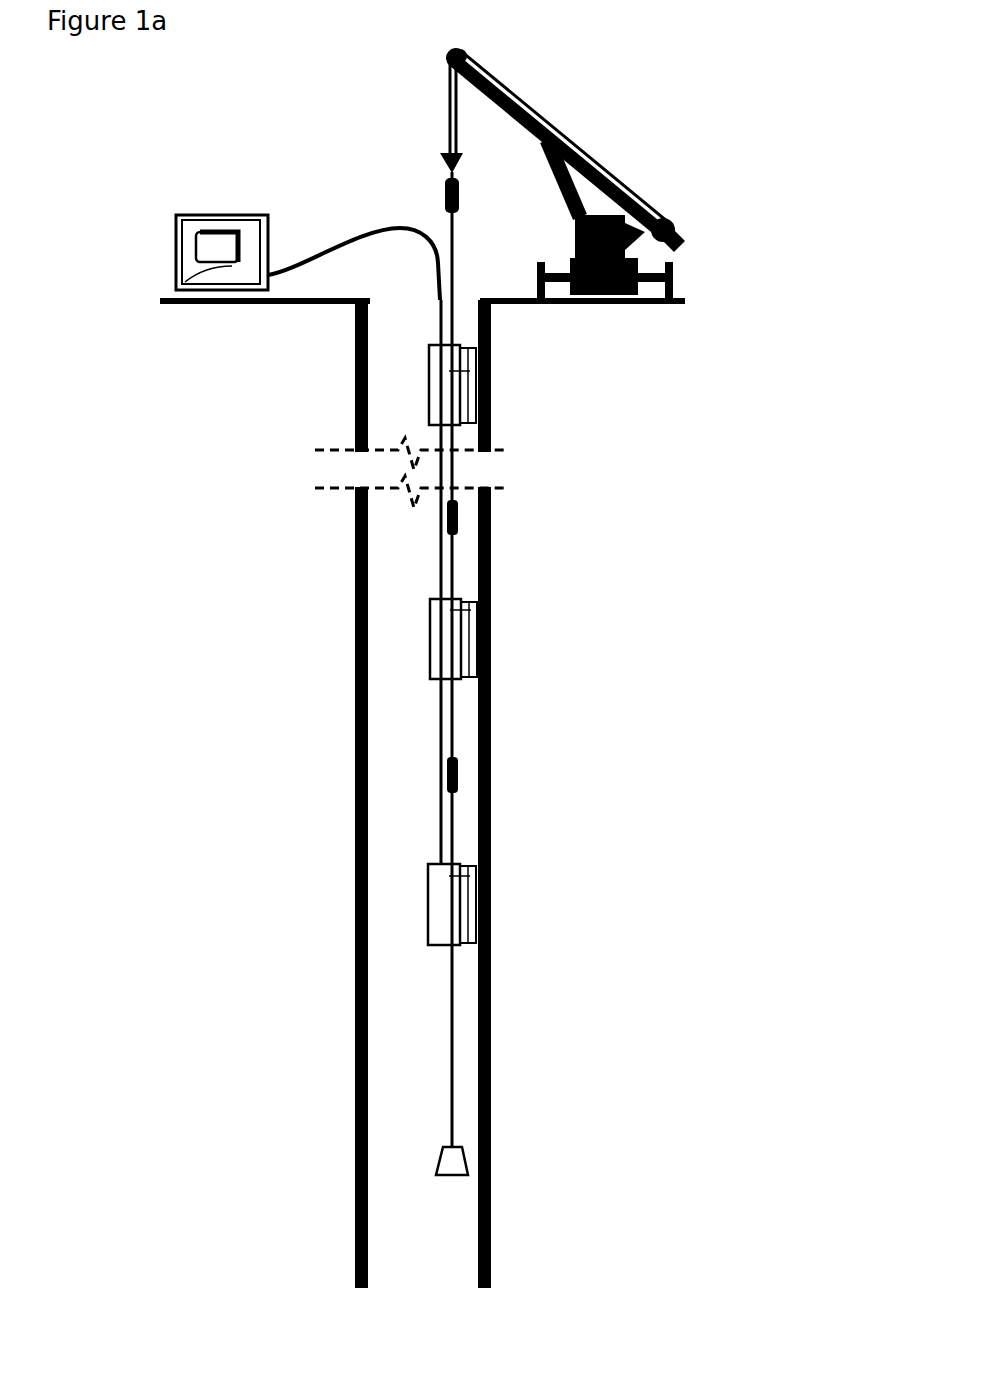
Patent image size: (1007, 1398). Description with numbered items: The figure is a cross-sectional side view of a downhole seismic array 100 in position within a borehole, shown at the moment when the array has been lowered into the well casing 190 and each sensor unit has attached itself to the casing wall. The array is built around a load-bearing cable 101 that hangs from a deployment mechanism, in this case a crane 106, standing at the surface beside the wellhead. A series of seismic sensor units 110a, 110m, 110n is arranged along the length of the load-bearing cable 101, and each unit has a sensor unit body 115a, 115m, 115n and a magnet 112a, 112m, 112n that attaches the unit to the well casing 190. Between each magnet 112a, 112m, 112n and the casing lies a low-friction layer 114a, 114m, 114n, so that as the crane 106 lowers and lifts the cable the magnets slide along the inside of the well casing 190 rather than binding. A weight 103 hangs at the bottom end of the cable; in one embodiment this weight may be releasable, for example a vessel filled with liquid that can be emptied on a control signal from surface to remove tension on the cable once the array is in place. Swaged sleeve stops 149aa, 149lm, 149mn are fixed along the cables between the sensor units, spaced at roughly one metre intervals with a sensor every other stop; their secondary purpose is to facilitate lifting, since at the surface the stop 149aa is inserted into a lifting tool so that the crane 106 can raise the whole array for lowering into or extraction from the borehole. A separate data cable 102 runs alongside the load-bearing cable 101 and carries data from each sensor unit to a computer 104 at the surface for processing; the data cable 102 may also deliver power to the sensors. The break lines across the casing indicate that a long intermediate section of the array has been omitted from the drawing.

The downhole seismic array 100 is at (322, 209).
The load-bearing cable 101 is at (442, 551).
The data cable 102 is at (447, 778).
The weight 103 is at (455, 1160).
The computer 104 is at (175, 299).
The deployment mechanism (crane) 106 is at (650, 202).
The seismic sensor unit 110a is at (445, 387).
The seismic sensor unit 110m is at (445, 637).
The seismic sensor unit 110n is at (445, 905).
The magnet 112a is at (466, 390).
The magnet 112m is at (466, 632).
The magnet 112n is at (466, 895).
The low-friction layer 114a is at (470, 412).
The low-friction layer 114m is at (470, 655).
The low-friction layer 114n is at (470, 915).
The sensor unit body 115a is at (468, 371).
The sensor unit body 115m is at (466, 610).
The sensor unit body 115n is at (466, 876).
The swaged sleeve stop 149aa is at (445, 196).
The swaged sleeve stop 149lm is at (458, 520).
The swaged sleeve stop 149mn is at (459, 778).
The well casing 190 is at (490, 1250).